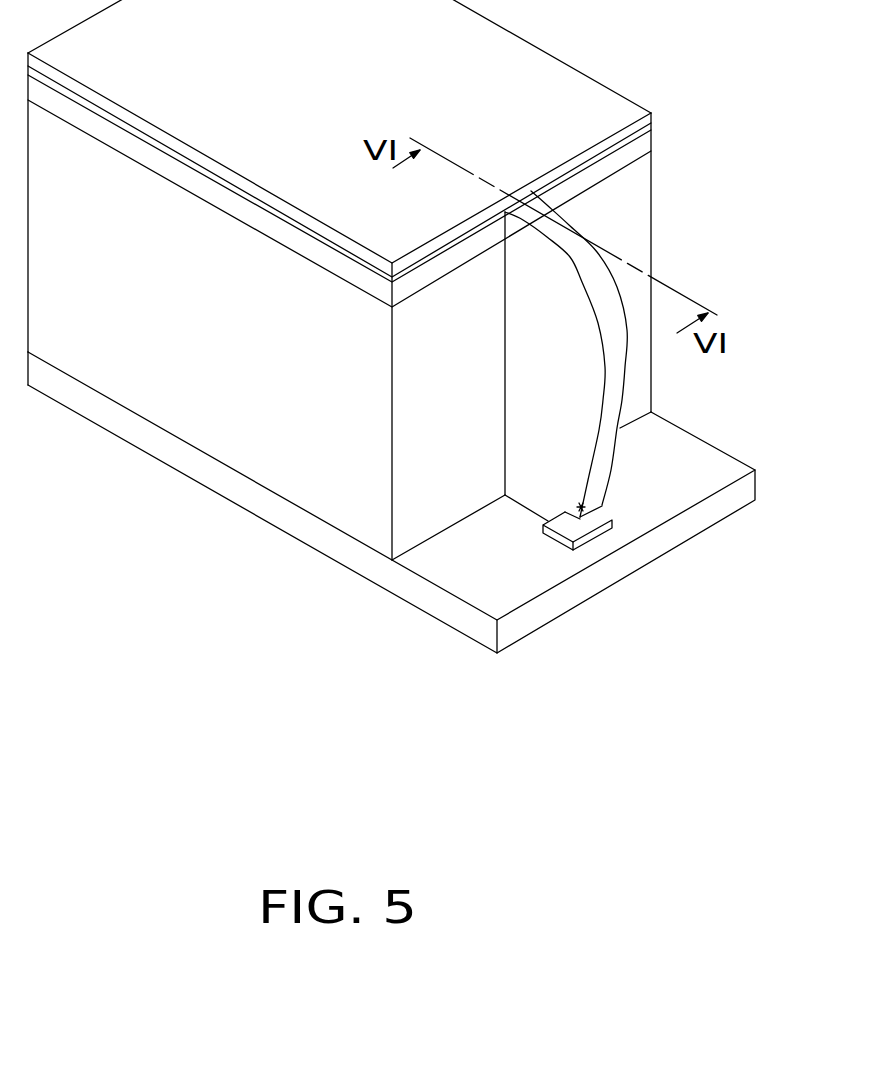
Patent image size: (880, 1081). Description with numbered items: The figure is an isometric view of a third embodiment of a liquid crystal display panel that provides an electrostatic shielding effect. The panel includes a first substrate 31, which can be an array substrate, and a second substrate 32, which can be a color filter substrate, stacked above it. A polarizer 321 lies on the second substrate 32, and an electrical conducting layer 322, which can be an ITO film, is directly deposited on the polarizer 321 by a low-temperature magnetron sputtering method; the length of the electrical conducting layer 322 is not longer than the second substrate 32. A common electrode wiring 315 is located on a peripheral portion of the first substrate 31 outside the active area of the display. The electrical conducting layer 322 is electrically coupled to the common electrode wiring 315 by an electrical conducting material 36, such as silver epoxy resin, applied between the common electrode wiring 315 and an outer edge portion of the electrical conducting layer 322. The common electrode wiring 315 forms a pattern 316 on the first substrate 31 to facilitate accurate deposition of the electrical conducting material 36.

The first substrate 31 is at (443, 607).
The second substrate 32 is at (643, 150).
The polarizer 321 is at (648, 121).
The electrical conducting layer 322 is at (652, 131).
The electrical conducting material 36 is at (613, 368).
The common electrode wiring 315 is at (613, 503).
The pattern 316 is at (597, 511).